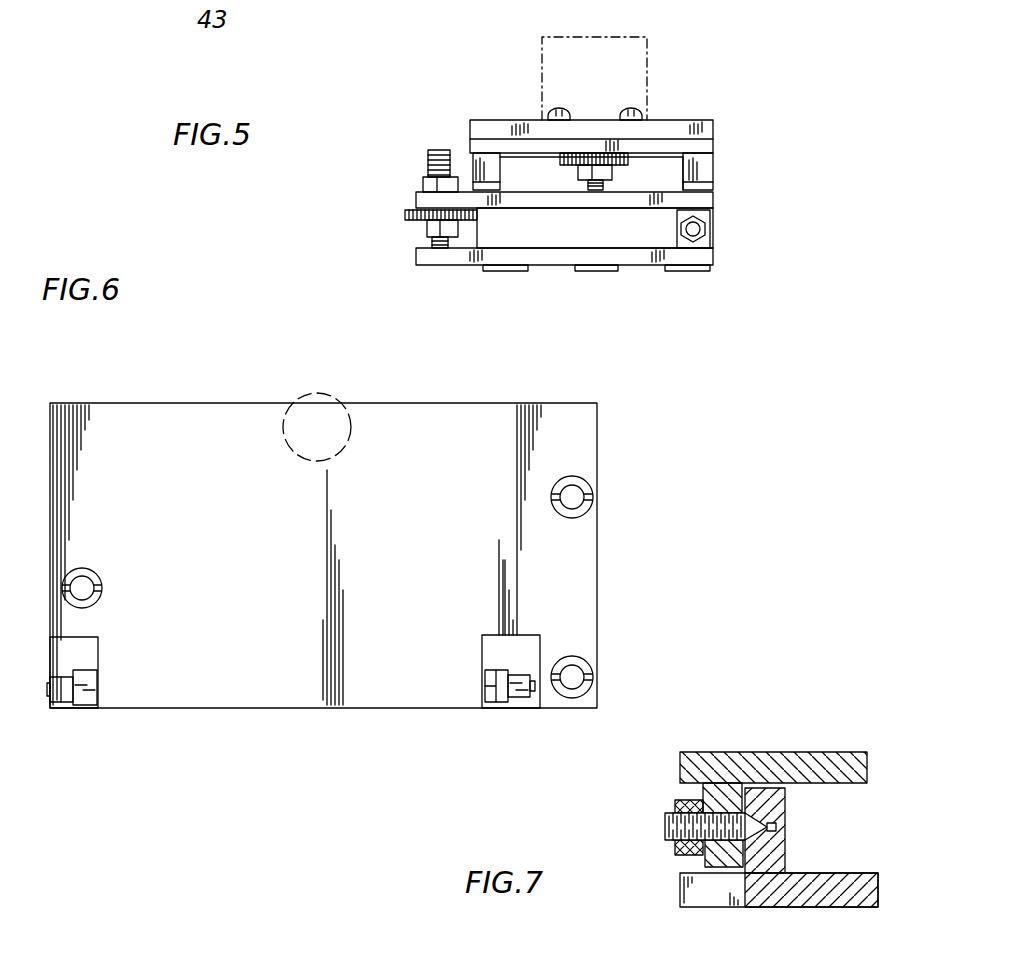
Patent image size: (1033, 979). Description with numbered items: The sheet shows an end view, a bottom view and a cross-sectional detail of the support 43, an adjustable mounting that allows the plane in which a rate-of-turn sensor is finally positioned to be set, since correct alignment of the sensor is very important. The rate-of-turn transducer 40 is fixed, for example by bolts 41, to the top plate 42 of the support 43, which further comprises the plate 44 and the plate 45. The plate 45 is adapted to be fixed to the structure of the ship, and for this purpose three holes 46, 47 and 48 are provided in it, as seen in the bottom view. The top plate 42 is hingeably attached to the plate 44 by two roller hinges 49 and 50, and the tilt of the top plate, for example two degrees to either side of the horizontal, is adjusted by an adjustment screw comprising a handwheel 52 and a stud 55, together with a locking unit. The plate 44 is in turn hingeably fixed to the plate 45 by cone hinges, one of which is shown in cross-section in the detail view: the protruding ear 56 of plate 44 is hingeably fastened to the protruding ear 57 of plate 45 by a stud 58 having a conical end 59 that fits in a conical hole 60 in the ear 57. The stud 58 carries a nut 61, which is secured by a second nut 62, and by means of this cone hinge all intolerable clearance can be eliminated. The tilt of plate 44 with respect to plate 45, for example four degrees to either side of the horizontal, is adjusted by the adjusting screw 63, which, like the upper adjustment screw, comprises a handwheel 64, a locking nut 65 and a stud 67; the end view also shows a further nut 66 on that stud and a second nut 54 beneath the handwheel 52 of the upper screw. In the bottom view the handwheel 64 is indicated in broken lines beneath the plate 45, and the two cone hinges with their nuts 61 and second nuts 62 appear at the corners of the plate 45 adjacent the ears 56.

In FIG. 5, the rate-of-turn transducer 40 is at (627, 42).
In FIG. 5, the bolts 41 is at (636, 114).
In FIG. 5, the top plate 42 is at (709, 130).
In FIG. 5, the support 43 is at (338, 128).
In FIG. 6, the support 43 is at (184, 380).
In FIG. 5, the plate 44 is at (713, 198).
In FIG. 7, the plate 44 is at (700, 763).
In FIG. 5, the plate 45 is at (713, 258).
In FIG. 6, the plate 45 is at (580, 587).
In FIG. 7, the plate 45 is at (765, 898).
In FIG. 5, the hole 46 is at (506, 271).
In FIG. 6, the hole 46 is at (580, 487).
In FIG. 5, the hole 47 is at (698, 270).
In FIG. 6, the hole 47 is at (583, 668).
In FIG. 5, the hole 48 is at (600, 271).
In FIG. 6, the hole 48 is at (98, 577).
In FIG. 5, the roller hinge 49 is at (472, 157).
In FIG. 5, the roller hinge 50 is at (713, 168).
In FIG. 5, the handwheel 52 is at (557, 158).
In FIG. 5, the nut 54 is at (578, 172).
In FIG. 5, the stud 55 is at (610, 184).
In FIG. 6, the protruding ear 56 is at (88, 697).
In FIG. 7, the protruding ear 56 is at (720, 790).
In FIG. 7, the protruding ear 57 is at (770, 857).
In FIG. 7, the stud 58 is at (667, 832).
In FIG. 7, the conical end 59 is at (777, 810).
In FIG. 7, the conical hole 60 is at (780, 827).
In FIG. 6, the nut 61 is at (68, 705).
In FIG. 7, the nut 61 is at (698, 857).
In FIG. 6, the second nut 62 is at (55, 697).
In FIG. 7, the second nut 62 is at (670, 807).
In FIG. 5, the adjusting screw 63 is at (488, 228).
In FIG. 5, the handwheel 64 is at (406, 215).
In FIG. 6, the handwheel 64 is at (313, 392).
In FIG. 5, the locking nut 65 is at (423, 186).
In FIG. 5, the nut 66 is at (428, 228).
In FIG. 5, the stud 67 is at (430, 153).